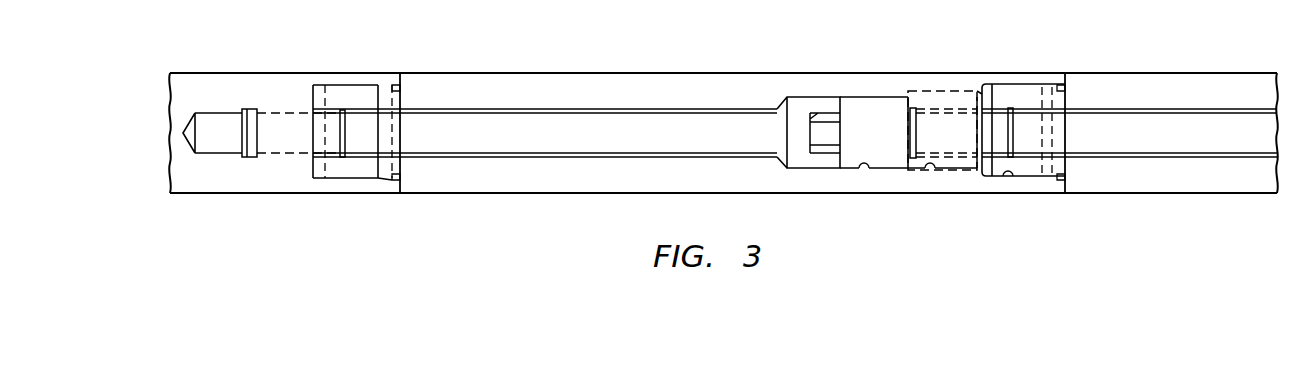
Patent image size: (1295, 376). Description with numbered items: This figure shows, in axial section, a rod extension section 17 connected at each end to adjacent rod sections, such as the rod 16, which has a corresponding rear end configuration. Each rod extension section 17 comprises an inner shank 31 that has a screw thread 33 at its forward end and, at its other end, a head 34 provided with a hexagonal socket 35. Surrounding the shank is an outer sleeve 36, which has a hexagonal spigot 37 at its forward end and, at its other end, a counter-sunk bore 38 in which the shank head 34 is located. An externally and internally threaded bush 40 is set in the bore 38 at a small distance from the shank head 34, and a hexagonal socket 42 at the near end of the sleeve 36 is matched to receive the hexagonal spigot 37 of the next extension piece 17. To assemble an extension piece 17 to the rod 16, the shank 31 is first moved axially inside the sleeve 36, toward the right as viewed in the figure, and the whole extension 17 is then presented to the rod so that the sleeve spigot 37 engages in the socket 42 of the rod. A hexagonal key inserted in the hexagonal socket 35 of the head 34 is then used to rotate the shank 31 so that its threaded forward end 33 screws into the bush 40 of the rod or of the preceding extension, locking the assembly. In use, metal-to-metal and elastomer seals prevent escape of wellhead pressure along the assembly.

The rod 16 is at (265, 82).
The rod extension section 17 is at (689, 64).
The inner shank 31 is at (428, 148).
The screw thread 33 is at (295, 143).
The head 34 is at (793, 163).
The hexagonal socket 35 is at (810, 117).
The outer sleeve 36 is at (510, 82).
The hexagonal spigot 37 is at (357, 173).
The counter-sunk bore 38 is at (866, 165).
The externally and internally threaded bush 40 is at (931, 165).
The hexagonal socket 42 is at (1009, 173).